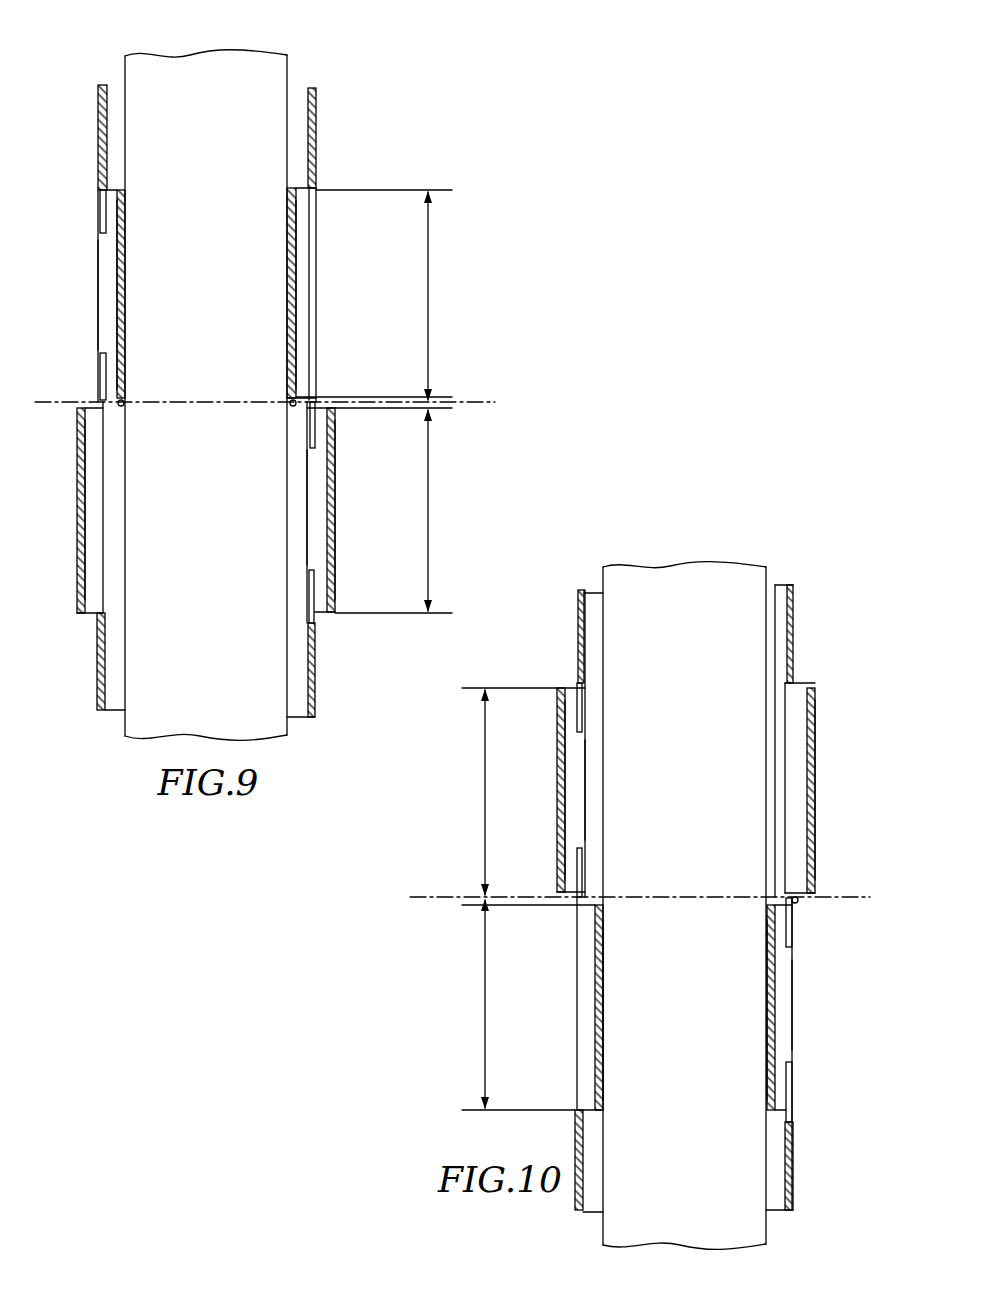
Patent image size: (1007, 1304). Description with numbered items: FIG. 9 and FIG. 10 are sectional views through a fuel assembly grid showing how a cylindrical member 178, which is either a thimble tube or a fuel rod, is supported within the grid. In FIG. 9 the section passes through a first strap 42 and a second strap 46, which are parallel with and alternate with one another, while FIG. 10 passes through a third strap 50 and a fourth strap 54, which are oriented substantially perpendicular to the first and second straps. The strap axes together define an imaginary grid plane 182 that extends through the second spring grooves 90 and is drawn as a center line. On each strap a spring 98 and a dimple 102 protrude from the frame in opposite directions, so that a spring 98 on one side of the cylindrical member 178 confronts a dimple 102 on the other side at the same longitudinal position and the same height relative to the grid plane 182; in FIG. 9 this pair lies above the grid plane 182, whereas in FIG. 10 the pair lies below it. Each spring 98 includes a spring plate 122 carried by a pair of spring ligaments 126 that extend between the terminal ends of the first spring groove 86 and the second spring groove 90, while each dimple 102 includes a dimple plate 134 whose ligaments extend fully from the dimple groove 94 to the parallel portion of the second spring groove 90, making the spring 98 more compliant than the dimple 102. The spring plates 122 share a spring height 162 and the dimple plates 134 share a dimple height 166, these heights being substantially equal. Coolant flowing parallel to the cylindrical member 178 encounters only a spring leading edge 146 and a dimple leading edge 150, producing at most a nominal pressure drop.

In FIG. 9, the first strap 42 is at (100, 130).
In FIG. 9, the second strap 46 is at (318, 132).
In FIG. 10, the third strap 50 is at (580, 630).
In FIG. 10, the fourth strap 54 is at (795, 610).
In FIG. 9, the first spring groove 86 is at (100, 197).
In FIG. 10, the first spring groove 86 is at (578, 688).
In FIG. 9, the second spring groove 90 is at (100, 398).
In FIG. 10, the second spring groove 90 is at (585, 893).
In FIG. 9, the dimple groove 94 is at (318, 188).
In FIG. 10, the dimple groove 94 is at (786, 684).
In FIG. 9, the spring 98 is at (128, 244).
In FIG. 10, the spring 98 is at (560, 775).
In FIG. 9, the dimple 102 is at (286, 245).
In FIG. 10, the dimple 102 is at (812, 710).
In FIG. 9, the spring plate 122 is at (128, 286).
In FIG. 10, the spring plate 122 is at (560, 820).
In FIG. 9, the spring ligament 126 is at (103, 298).
In FIG. 10, the spring ligament 126 is at (586, 750).
In FIG. 9, the dimple plate 134 is at (286, 302).
In FIG. 10, the dimple plate 134 is at (817, 790).
In FIG. 9, the spring leading edge 146 is at (123, 406).
In FIG. 10, the spring leading edge 146 is at (768, 1118).
In FIG. 9, the dimple leading edge 150 is at (293, 410).
In FIG. 10, the dimple leading edge 150 is at (796, 906).
In FIG. 9, the spring height 162 is at (428, 506).
In FIG. 10, the spring height 162 is at (485, 772).
In FIG. 9, the dimple height 166 is at (428, 303).
In FIG. 10, the dimple height 166 is at (485, 996).
In FIG. 9, the cylindrical member 178 is at (289, 76).
In FIG. 10, the cylindrical member 178 is at (770, 570).
In FIG. 9, the grid plane 182 is at (458, 403).
In FIG. 10, the grid plane 182 is at (440, 897).